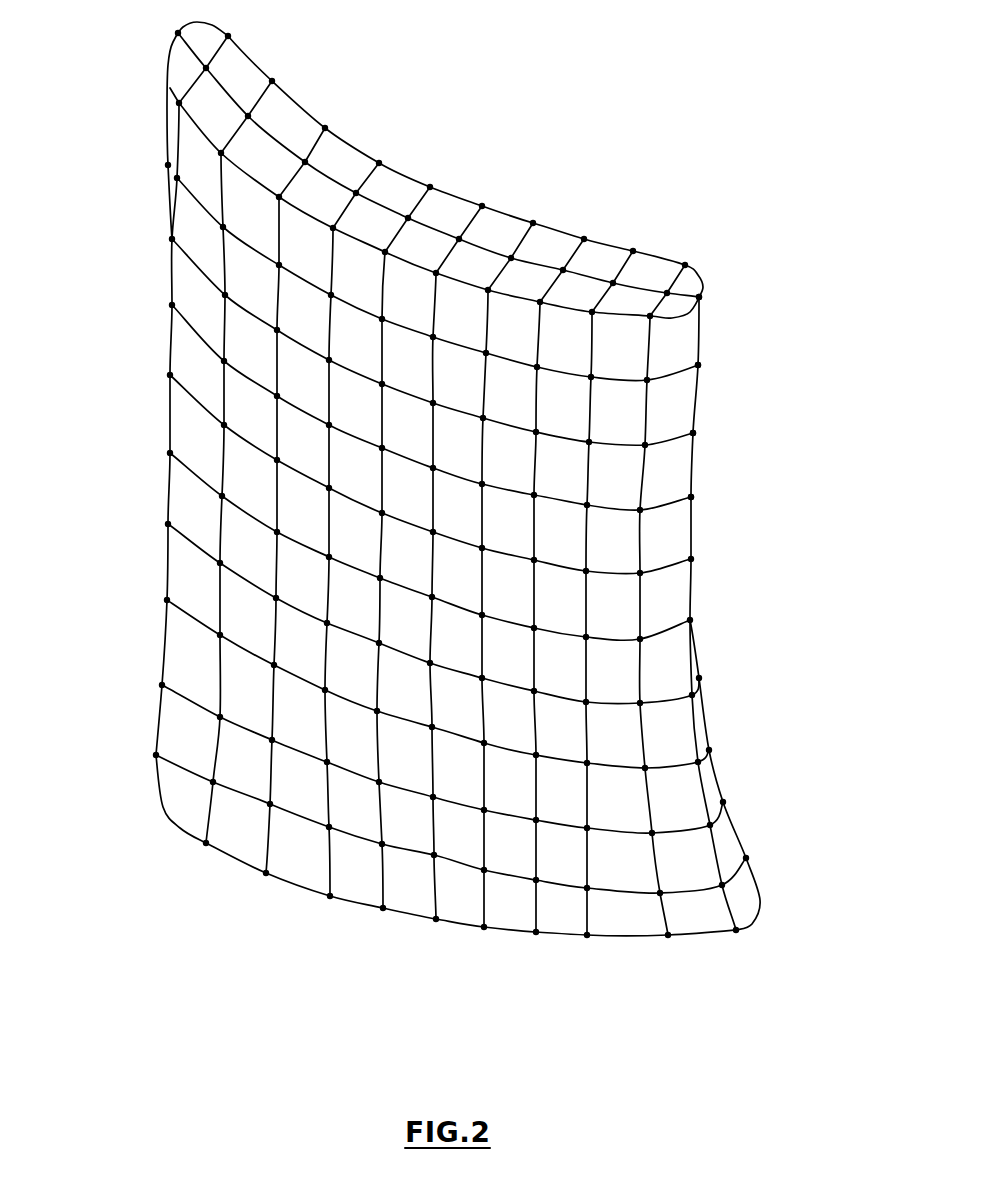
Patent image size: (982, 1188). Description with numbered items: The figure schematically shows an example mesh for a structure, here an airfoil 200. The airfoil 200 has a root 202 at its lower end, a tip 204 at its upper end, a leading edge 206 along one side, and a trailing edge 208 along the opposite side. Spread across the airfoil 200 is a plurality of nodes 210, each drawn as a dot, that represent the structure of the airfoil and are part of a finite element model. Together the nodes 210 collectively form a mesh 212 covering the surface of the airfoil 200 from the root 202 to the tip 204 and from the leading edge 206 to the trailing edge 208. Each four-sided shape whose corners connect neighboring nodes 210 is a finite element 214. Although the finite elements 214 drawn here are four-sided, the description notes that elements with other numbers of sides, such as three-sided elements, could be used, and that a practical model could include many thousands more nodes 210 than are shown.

The airfoil 200 is at (594, 194).
The root 202 is at (573, 997).
The tip 204 is at (447, 175).
The leading edge 206 is at (163, 132).
The trailing edge 208 is at (720, 550).
The nodes 210 is at (710, 750).
The mesh 212 is at (135, 513).
The finite element 214 is at (668, 402).